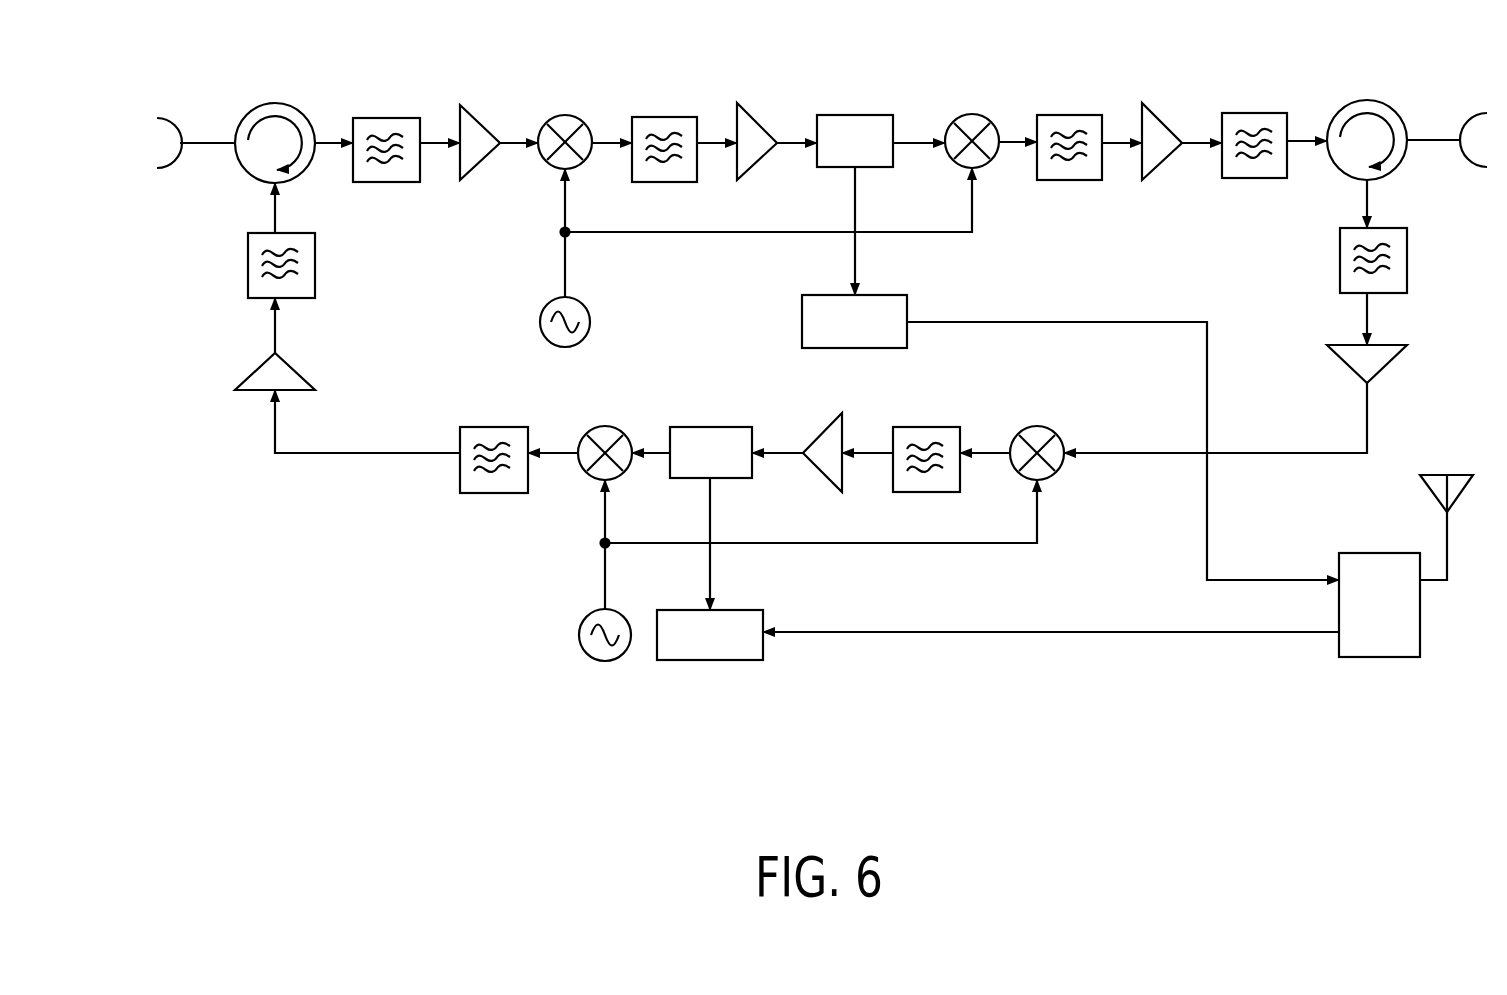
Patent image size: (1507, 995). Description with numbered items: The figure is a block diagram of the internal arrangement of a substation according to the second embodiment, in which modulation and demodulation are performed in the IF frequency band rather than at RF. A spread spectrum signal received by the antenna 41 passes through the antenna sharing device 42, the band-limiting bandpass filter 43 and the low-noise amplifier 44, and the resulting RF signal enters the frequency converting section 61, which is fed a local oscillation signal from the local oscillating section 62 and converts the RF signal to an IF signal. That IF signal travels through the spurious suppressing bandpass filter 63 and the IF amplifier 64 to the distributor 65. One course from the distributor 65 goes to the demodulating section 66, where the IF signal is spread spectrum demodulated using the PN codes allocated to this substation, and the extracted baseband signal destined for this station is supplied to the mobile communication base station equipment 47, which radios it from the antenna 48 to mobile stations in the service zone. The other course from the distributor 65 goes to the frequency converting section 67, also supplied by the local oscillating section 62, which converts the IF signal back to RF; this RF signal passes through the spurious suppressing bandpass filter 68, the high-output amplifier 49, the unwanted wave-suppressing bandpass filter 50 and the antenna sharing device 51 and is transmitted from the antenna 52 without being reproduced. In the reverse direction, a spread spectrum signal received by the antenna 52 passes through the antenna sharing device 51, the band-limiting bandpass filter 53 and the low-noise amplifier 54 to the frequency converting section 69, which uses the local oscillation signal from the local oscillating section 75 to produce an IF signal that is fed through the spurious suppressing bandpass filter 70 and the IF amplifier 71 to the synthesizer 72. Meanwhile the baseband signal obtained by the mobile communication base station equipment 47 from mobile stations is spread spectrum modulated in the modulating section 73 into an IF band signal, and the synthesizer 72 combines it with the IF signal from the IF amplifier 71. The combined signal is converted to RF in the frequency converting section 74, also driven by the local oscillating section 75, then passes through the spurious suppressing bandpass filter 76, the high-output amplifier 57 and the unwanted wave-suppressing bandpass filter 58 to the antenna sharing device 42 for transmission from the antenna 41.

The antenna 41 is at (176, 130).
The antenna sharing device 42 is at (299, 123).
The band-limiting bandpass filter 43 is at (402, 118).
The low-noise amplifier 44 is at (490, 126).
The mobile communication base station equipment 47 is at (1380, 658).
The antenna 48 is at (1452, 475).
The high-output amplifier 49 is at (1164, 126).
The unwanted wave-suppressing bandpass filter 50 is at (1260, 113).
The antenna sharing device 51 is at (1369, 106).
The antenna 52 is at (1472, 119).
The band-limiting bandpass filter 53 is at (1407, 248).
The low-noise amplifier 54 is at (1395, 362).
The high-output amplifier 57 is at (258, 372).
The unwanted wave-suppressing bandpass filter 58 is at (248, 255).
The frequency converting section 61 is at (574, 126).
The local oscillating section 62 is at (543, 303).
The spurious suppressing bandpass filter 63 is at (670, 120).
The IF amplifier 64 is at (760, 126).
The distributor 65 is at (857, 115).
The demodulating section 66 is at (821, 295).
The frequency converting section 67 is at (967, 115).
The spurious suppressing bandpass filter 68 is at (1076, 119).
The frequency converting section 69 is at (1045, 428).
The spurious suppressing bandpass filter 70 is at (930, 427).
The IF amplifier 71 is at (828, 426).
The synthesizer 72 is at (704, 427).
The modulating section 73 is at (729, 662).
The frequency converting section 74 is at (599, 427).
The local oscillating section 75 is at (602, 662).
The spurious suppressing bandpass filter 76 is at (493, 427).